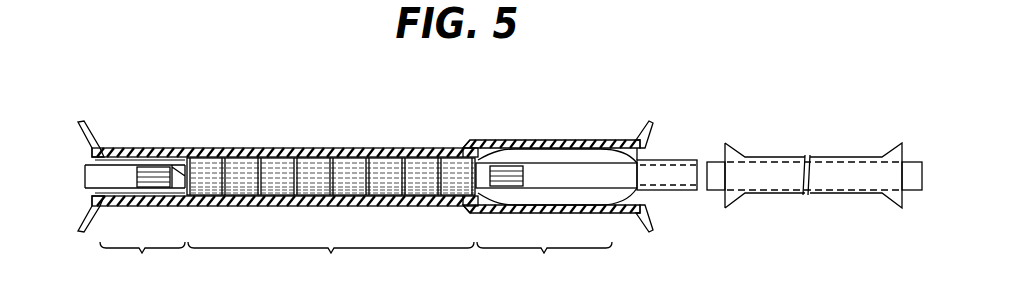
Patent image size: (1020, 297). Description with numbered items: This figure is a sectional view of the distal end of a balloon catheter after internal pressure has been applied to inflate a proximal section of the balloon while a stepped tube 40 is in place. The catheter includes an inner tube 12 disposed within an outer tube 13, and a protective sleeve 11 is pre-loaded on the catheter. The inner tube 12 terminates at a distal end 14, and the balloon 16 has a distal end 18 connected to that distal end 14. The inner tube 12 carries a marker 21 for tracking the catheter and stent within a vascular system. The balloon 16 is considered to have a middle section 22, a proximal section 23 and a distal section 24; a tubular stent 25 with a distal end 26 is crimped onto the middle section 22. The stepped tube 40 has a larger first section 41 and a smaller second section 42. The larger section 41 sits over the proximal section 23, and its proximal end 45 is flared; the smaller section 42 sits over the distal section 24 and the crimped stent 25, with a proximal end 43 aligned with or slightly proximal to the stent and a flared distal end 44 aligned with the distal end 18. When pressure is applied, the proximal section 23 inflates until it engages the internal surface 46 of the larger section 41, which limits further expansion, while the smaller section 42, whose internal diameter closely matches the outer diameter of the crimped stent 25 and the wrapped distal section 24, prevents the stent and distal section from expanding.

The protective sleeve 11 is at (800, 155).
The inner tube 12 is at (570, 160).
The outer tube 13 is at (688, 158).
The distal end of inner tube 14 is at (110, 165).
The balloon 16 is at (638, 157).
The distal end of balloon 18 is at (113, 190).
The marker 21 is at (150, 167).
The middle section of balloon 22 is at (331, 263).
The proximal section of balloon 23 is at (544, 263).
The distal section of balloon 24 is at (142, 263).
The stent 25 is at (358, 160).
The distal end of stent 26 is at (182, 170).
The stepped tube 40 is at (331, 142).
The larger first section 41 is at (610, 140).
The smaller second section 42 is at (211, 149).
The proximal end of smaller section 43 is at (471, 154).
The distal end of smaller section 44 is at (90, 150).
The proximal end of larger section 45 is at (643, 150).
The internal surface 46 is at (538, 151).